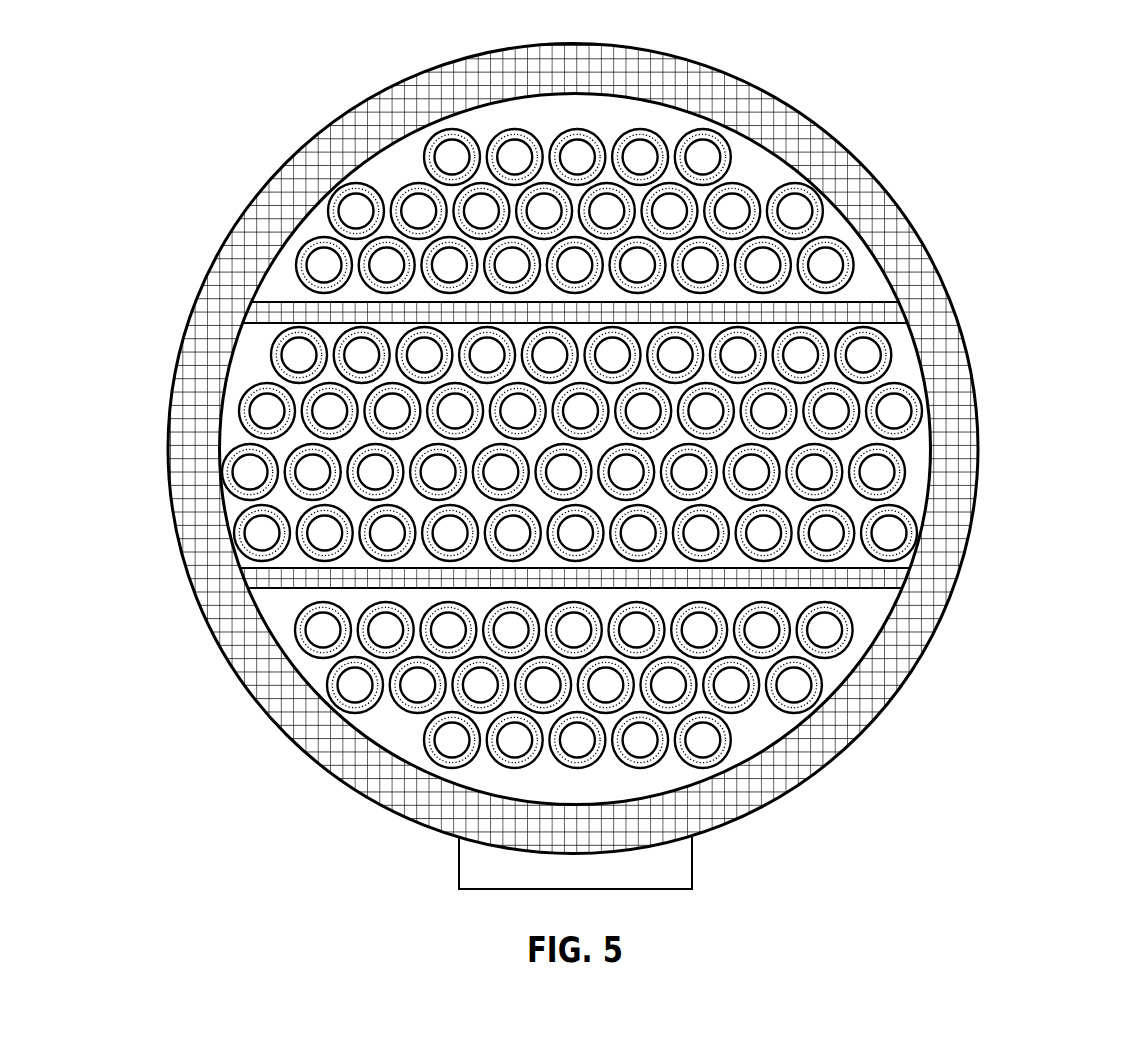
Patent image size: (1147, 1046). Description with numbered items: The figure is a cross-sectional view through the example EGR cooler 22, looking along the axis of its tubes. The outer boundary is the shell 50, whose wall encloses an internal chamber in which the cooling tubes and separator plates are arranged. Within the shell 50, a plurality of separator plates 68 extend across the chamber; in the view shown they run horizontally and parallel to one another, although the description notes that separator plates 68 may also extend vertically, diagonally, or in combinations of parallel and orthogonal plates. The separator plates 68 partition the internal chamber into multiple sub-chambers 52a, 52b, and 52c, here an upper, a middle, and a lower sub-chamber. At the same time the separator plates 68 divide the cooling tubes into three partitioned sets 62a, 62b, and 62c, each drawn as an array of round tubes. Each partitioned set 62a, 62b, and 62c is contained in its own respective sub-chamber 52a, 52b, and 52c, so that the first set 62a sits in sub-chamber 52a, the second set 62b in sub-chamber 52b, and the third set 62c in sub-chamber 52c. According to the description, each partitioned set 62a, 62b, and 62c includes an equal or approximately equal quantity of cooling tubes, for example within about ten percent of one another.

The EGR cooler 22 is at (240, 118).
The shell 50 is at (787, 118).
The sub-chamber 52a is at (835, 223).
The sub-chamber 52b is at (915, 458).
The sub-chamber 52c is at (870, 608).
The partitioned set of cooling tubes 62a is at (333, 199).
The partitioned set of cooling tubes 62b is at (226, 473).
The partitioned set of cooling tubes 62c is at (297, 631).
The separator plate 68 is at (892, 313).